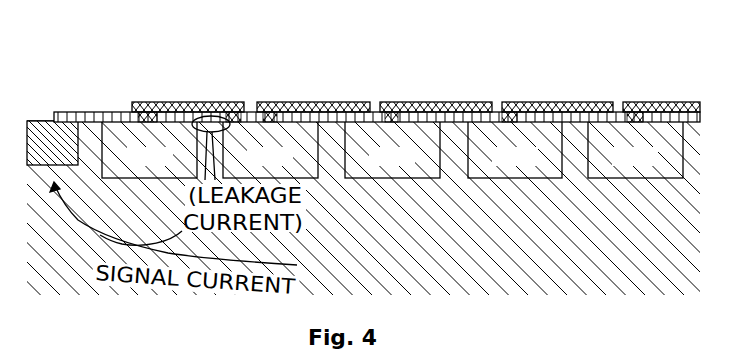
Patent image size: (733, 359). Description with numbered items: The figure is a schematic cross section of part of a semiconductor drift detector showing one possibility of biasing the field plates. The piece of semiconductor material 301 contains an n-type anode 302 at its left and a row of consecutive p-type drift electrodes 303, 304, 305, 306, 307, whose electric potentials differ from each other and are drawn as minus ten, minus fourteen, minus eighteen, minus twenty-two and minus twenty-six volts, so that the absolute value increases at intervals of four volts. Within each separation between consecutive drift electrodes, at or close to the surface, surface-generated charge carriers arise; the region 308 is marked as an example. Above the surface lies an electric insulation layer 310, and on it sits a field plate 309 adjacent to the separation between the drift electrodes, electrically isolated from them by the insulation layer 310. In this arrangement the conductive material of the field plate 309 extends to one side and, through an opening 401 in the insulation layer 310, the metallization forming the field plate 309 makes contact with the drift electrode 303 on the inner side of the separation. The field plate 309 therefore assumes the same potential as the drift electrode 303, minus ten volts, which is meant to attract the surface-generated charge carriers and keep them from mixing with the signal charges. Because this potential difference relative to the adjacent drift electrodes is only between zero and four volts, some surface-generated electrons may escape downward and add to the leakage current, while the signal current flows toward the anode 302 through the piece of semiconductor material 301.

The piece of semiconductor material 301 is at (371, 251).
The n-type anode 302 is at (46, 132).
The drift electrode 303 is at (115, 130).
The drift electrode 304 is at (298, 130).
The drift electrode 305 is at (420, 130).
The drift electrode 306 is at (540, 130).
The drift electrode 307 is at (665, 130).
The region of surface-generated charge carriers 308 is at (224, 116).
The field plate 309 is at (220, 117).
The electric insulation layer 310 is at (150, 120).
The opening 401 is at (143, 121).